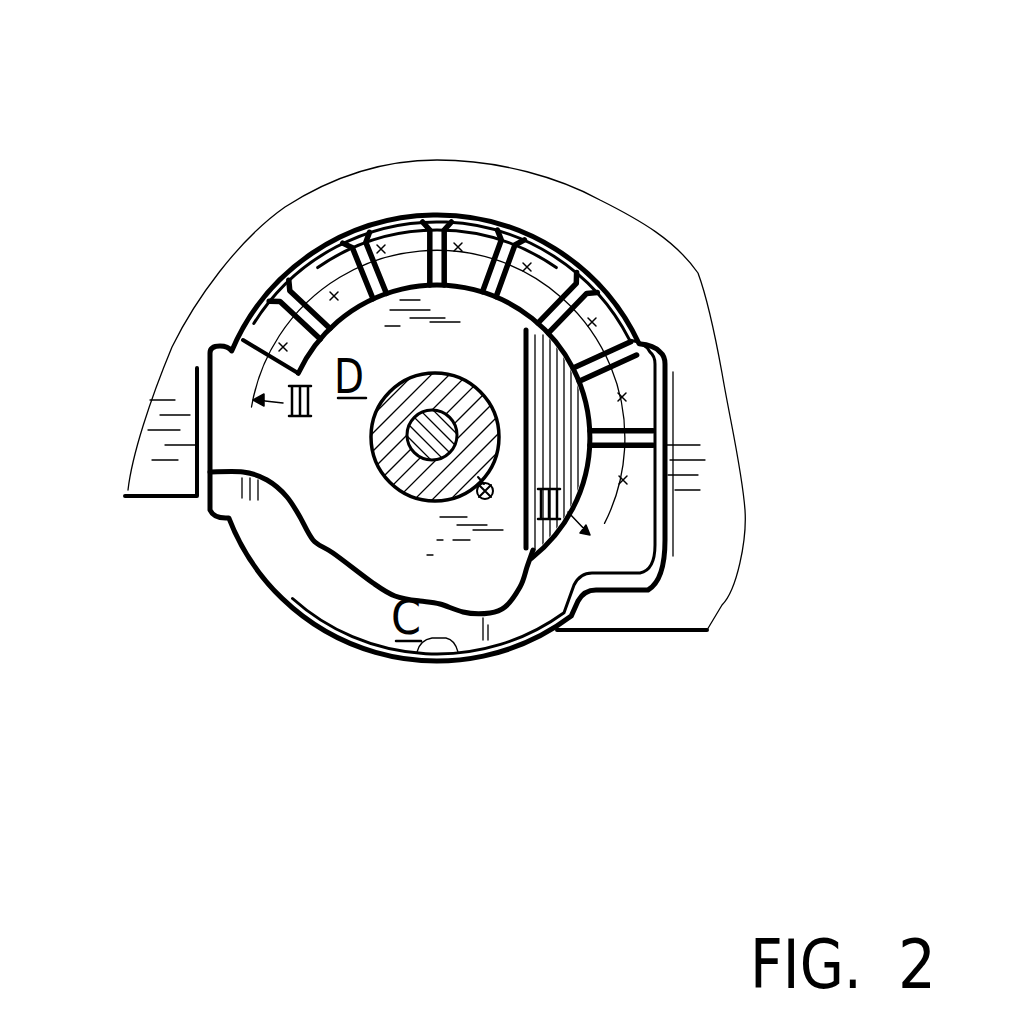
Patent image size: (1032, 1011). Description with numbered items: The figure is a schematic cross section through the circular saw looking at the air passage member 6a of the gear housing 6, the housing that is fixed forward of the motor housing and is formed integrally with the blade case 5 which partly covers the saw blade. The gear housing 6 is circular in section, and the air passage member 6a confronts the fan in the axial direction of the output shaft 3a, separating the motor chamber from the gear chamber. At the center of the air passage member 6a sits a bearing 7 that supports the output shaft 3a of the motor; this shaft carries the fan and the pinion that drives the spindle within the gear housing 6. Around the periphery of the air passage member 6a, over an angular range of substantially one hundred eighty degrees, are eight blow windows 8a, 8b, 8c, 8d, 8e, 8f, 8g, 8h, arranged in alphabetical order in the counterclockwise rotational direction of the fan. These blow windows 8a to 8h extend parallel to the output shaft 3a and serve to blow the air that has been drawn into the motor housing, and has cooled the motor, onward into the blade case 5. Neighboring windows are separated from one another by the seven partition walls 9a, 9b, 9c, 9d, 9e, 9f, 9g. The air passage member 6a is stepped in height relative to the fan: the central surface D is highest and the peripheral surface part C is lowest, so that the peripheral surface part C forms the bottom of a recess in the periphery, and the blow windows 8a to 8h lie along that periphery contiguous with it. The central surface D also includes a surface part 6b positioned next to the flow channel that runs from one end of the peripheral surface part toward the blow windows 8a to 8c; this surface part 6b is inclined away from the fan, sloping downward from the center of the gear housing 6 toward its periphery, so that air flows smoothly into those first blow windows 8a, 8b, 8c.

The output shaft 3a is at (437, 447).
The blade case 5 is at (585, 222).
The gear housing 6 is at (545, 252).
The air passage member 6a is at (393, 483).
The surface part 6b is at (560, 447).
The bearing 7 is at (433, 497).
The blow window 8a is at (623, 480).
The blow window 8b is at (622, 397).
The blow window 8c is at (592, 322).
The blow window 8d is at (527, 267).
The blow window 8e is at (458, 245).
The blow window 8f is at (381, 249).
The blow window 8g is at (333, 292).
The blow window 8h is at (283, 347).
The partition wall 9a is at (648, 437).
The partition wall 9b is at (627, 361).
The partition wall 9c is at (582, 293).
The partition wall 9d is at (508, 246).
The partition wall 9e is at (425, 236).
The partition wall 9f is at (350, 275).
The partition wall 9g is at (302, 270).